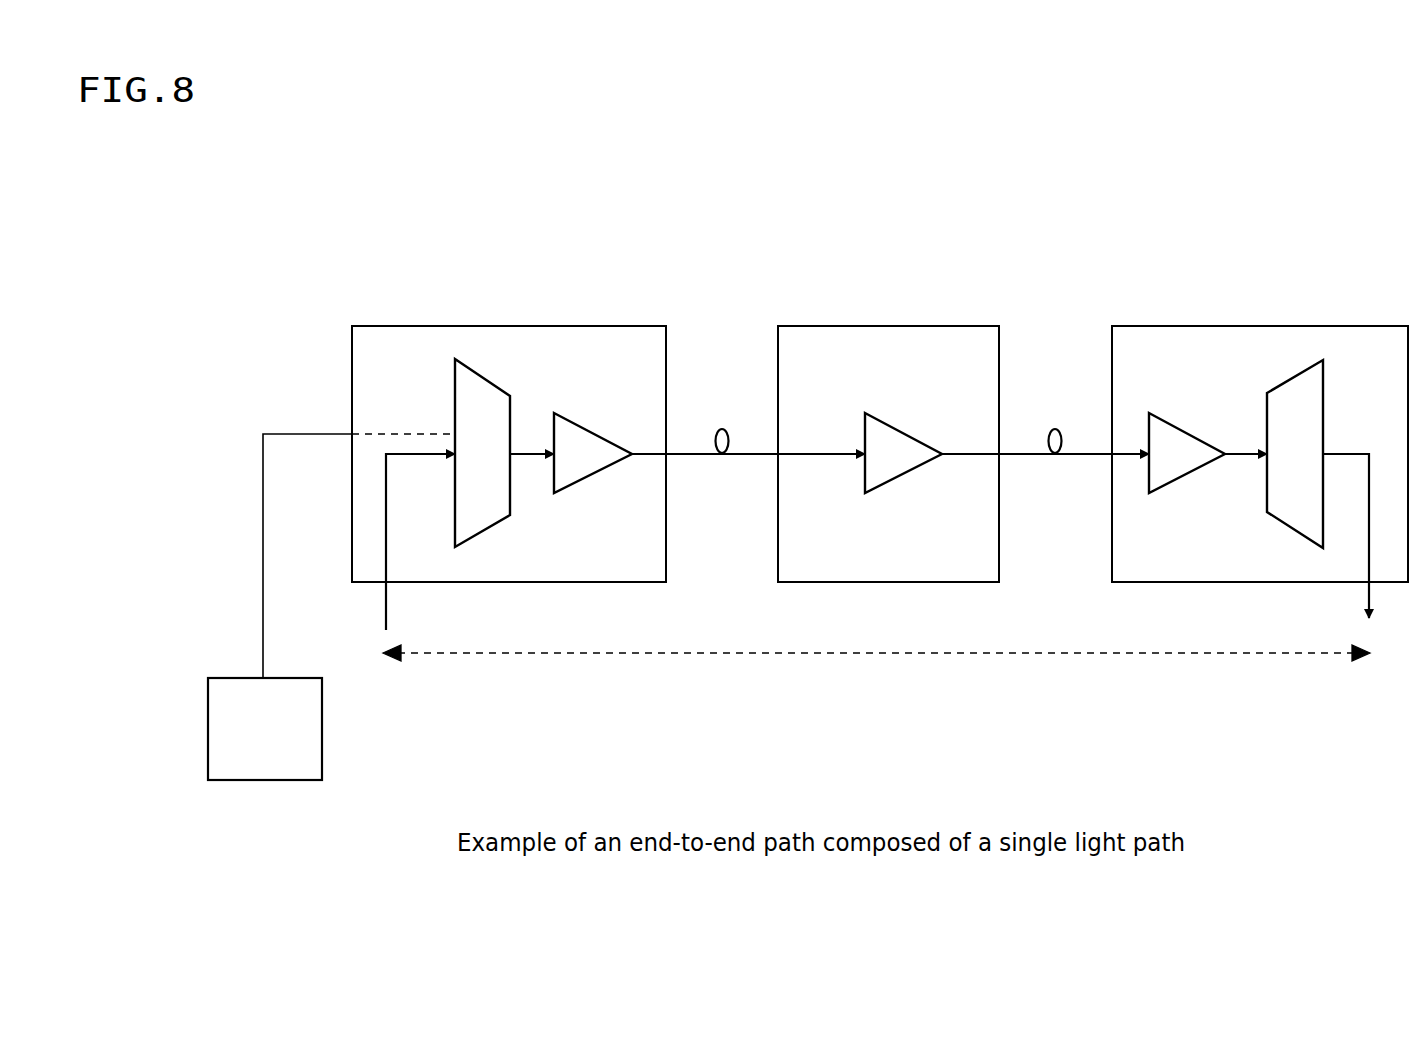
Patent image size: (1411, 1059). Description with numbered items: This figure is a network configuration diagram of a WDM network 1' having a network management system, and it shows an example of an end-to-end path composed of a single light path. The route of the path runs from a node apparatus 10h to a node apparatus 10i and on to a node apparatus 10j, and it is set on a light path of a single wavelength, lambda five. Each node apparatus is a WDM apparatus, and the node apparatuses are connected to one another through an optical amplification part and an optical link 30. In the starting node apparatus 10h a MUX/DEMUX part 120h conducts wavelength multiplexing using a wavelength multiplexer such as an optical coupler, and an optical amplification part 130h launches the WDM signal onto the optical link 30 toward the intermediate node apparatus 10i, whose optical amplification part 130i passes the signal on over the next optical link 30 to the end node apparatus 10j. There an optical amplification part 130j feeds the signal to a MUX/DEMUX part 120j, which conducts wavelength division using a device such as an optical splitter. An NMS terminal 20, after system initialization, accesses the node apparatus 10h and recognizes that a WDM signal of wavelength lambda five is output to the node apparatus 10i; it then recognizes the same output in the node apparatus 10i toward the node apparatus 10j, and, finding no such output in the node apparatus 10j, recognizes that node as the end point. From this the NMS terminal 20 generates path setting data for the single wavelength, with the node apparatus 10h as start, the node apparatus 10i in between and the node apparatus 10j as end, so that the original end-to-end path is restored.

The optical network 1' is at (1352, 178).
The node apparatus 10h is at (388, 326).
The node apparatus 10i is at (813, 326).
The node apparatus 10j is at (1155, 326).
The MUX/DEMUX part 120h is at (505, 396).
The MUX/DEMUX part 120j is at (1277, 393).
The optical amplification part 130h is at (570, 486).
The optical amplification part 130i is at (886, 486).
The optical amplification part 130j is at (1170, 486).
The optical link 30 is at (722, 429).
The NMS terminal 20 is at (323, 717).